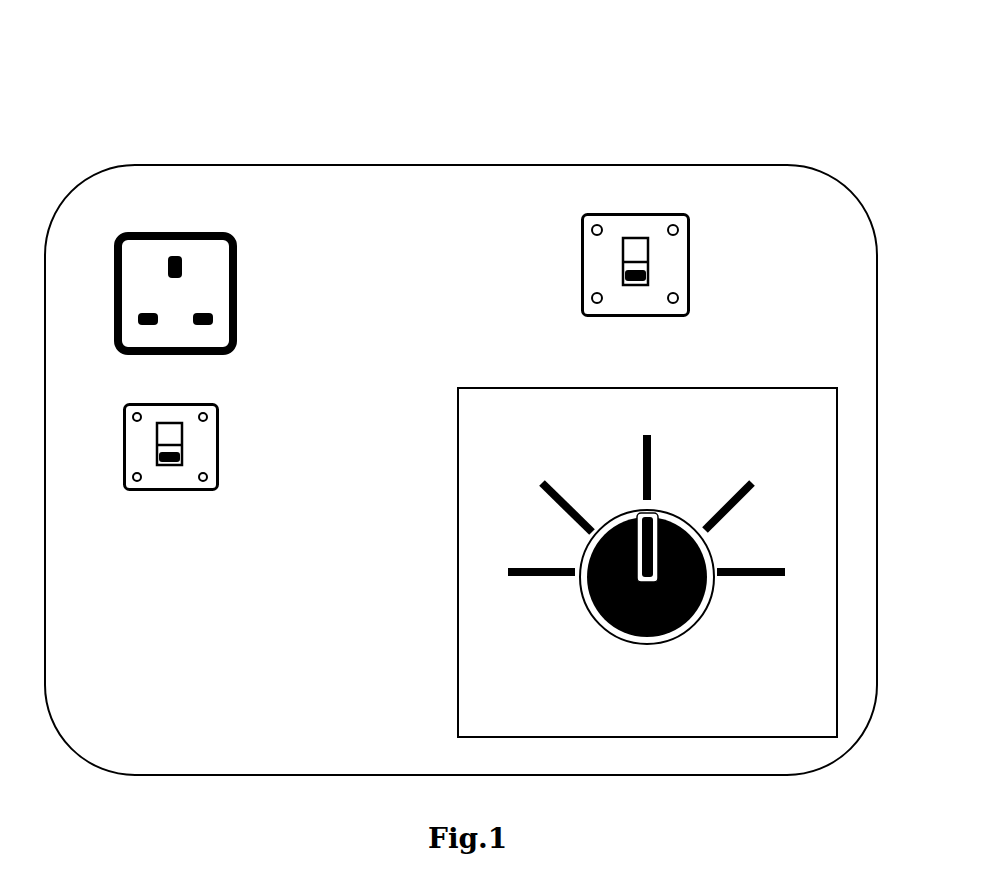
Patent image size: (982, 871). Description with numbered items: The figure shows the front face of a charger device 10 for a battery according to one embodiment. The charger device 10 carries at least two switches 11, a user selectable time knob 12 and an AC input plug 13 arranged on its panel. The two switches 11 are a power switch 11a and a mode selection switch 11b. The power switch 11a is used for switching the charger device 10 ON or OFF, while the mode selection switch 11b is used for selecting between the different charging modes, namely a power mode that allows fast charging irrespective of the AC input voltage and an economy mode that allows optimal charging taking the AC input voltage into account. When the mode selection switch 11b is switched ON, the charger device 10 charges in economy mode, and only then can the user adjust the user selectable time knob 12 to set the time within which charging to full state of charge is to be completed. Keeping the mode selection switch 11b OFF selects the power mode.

The charger device 10 is at (479, 88).
The switches 11 is at (488, 383).
The power switch 11a is at (175, 505).
The mode selection switch 11b is at (710, 247).
The user selectable time knob 12 is at (458, 620).
The AC input plug 13 is at (238, 288).